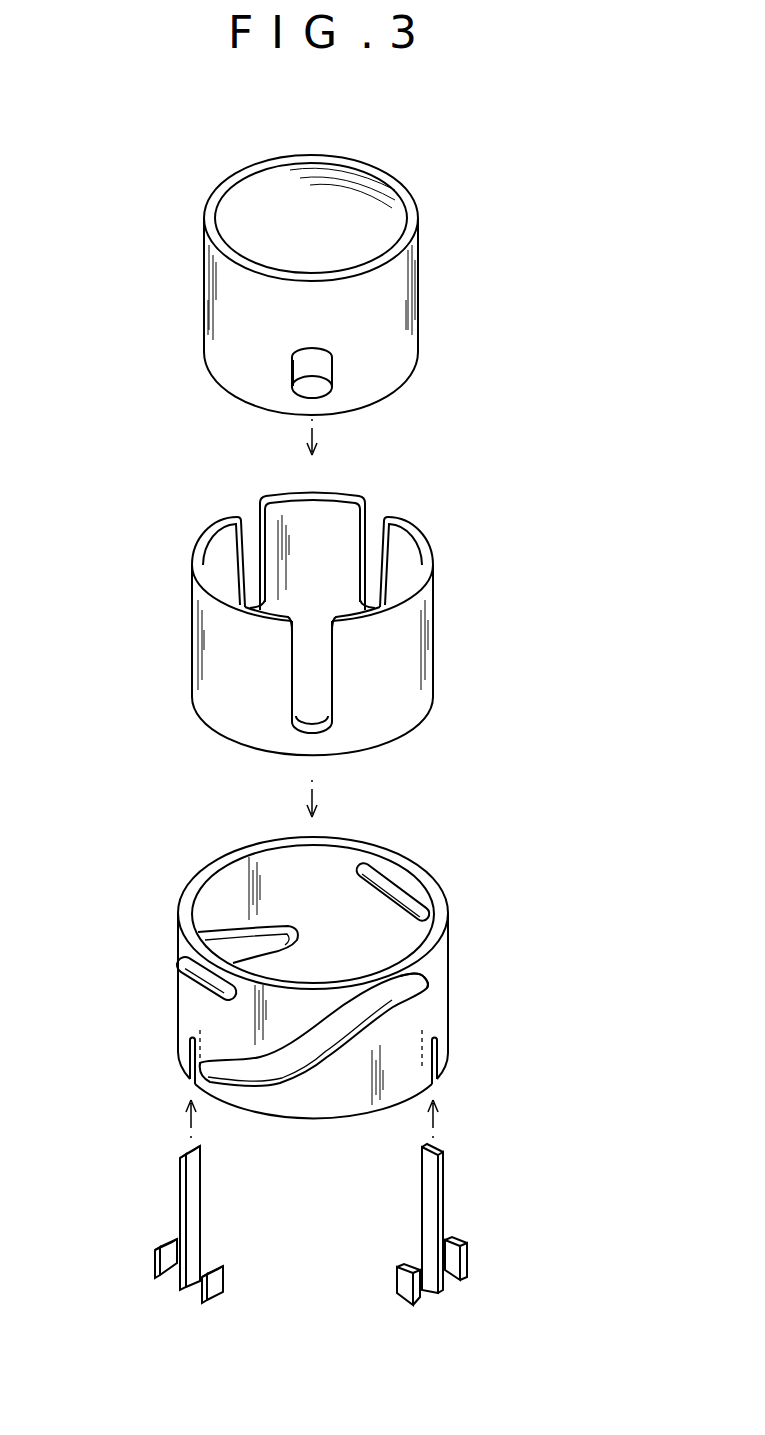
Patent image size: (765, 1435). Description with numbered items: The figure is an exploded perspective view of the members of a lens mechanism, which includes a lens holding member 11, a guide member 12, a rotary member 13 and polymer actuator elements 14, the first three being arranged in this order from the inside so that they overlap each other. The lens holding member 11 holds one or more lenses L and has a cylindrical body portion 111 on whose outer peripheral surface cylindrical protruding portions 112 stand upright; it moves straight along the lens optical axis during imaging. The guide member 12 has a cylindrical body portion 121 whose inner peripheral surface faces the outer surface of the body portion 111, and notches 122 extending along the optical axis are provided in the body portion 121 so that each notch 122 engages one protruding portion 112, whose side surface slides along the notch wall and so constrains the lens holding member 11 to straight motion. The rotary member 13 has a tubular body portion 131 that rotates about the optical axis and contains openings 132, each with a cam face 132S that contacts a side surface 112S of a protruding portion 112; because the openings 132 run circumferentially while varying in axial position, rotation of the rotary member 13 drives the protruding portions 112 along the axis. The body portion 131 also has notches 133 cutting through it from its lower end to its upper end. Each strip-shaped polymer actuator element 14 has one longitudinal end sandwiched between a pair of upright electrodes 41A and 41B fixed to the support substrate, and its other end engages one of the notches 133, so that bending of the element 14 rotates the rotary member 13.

The lens holding member 11 is at (478, 177).
The body portion 111 is at (398, 284).
The protruding portion 112 is at (308, 387).
The side surface 112S is at (325, 365).
The lens L is at (258, 195).
The guide member 12 is at (473, 558).
The body portion 121 is at (402, 653).
The notch 122 is at (295, 668).
The rotary member 13 is at (473, 876).
The body portion 131 is at (188, 1008).
The opening 132 is at (295, 1060).
The cam face 132S is at (405, 997).
The notch 133 is at (176, 1084).
The polymer actuator element 14 is at (193, 1211).
The electrode 41A is at (168, 1267).
The electrode 41B is at (216, 1285).